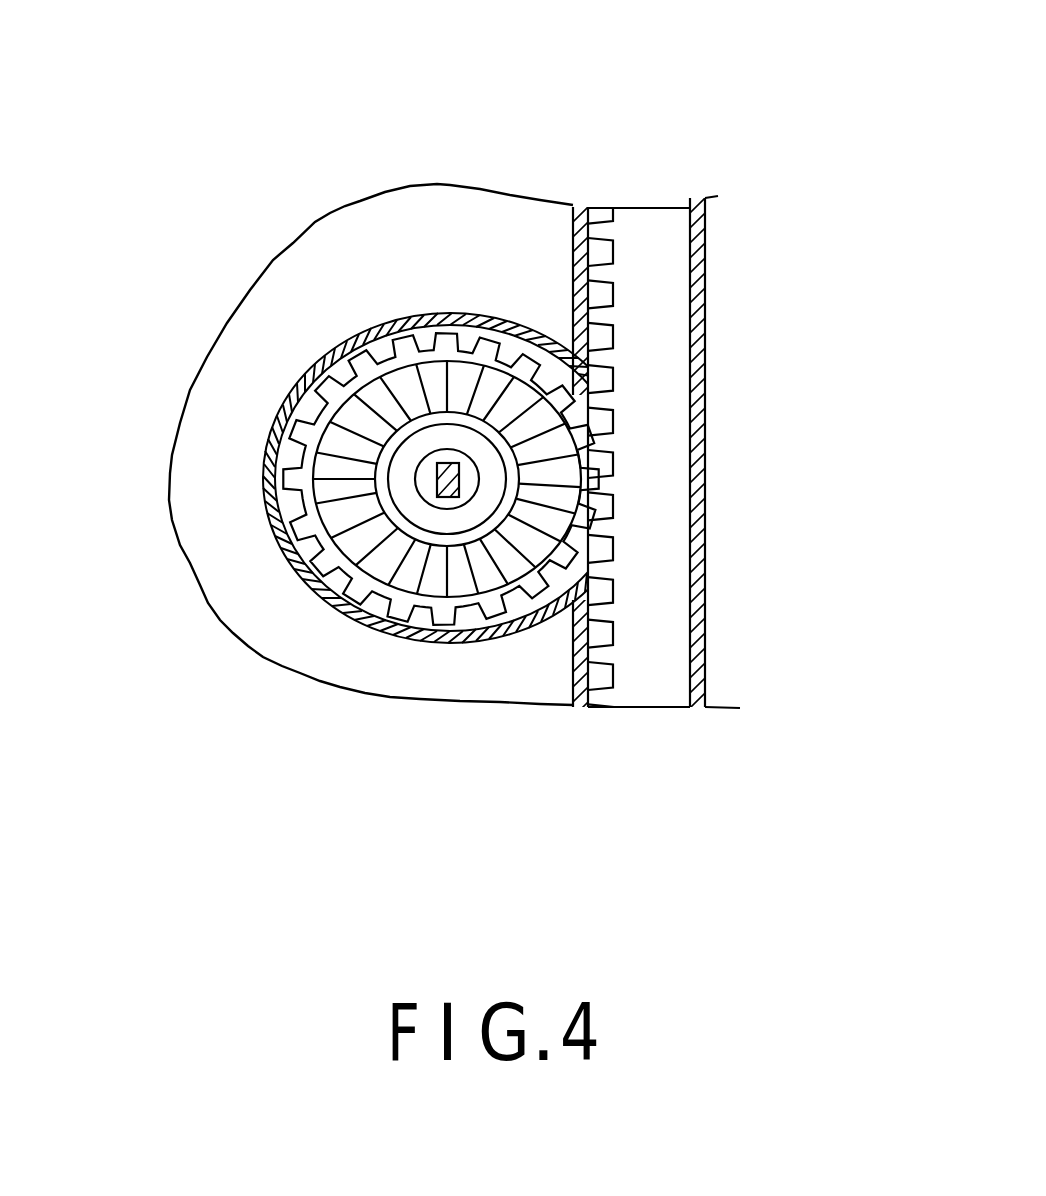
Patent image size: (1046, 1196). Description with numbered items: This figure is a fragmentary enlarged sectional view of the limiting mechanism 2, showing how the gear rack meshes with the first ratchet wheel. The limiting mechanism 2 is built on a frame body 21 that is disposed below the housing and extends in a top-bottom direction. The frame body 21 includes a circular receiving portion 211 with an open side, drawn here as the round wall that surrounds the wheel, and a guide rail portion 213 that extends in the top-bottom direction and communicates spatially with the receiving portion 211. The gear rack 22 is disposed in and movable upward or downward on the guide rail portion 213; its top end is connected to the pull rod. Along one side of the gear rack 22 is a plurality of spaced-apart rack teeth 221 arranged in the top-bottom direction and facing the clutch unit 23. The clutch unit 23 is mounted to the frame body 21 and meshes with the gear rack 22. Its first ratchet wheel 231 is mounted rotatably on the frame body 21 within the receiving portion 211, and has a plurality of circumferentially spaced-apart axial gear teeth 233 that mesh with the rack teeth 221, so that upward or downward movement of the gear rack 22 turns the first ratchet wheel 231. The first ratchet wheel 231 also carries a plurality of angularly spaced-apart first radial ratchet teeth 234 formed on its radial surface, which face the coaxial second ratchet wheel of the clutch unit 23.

The limiting mechanism 2 is at (510, 135).
The frame body 21 is at (454, 446).
The receiving portion 211 is at (372, 622).
The gear rack 22 is at (705, 464).
The rack teeth 221 is at (603, 437).
The guide rail portion 213 is at (703, 472).
The clutch unit 23 is at (325, 568).
The first ratchet wheel 231 is at (297, 568).
The axial gear teeth 233 is at (600, 457).
The first radial ratchet teeth 234 is at (340, 467).